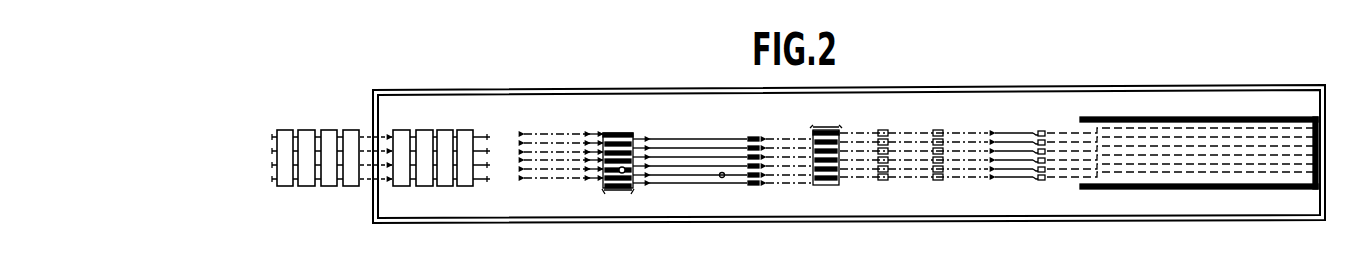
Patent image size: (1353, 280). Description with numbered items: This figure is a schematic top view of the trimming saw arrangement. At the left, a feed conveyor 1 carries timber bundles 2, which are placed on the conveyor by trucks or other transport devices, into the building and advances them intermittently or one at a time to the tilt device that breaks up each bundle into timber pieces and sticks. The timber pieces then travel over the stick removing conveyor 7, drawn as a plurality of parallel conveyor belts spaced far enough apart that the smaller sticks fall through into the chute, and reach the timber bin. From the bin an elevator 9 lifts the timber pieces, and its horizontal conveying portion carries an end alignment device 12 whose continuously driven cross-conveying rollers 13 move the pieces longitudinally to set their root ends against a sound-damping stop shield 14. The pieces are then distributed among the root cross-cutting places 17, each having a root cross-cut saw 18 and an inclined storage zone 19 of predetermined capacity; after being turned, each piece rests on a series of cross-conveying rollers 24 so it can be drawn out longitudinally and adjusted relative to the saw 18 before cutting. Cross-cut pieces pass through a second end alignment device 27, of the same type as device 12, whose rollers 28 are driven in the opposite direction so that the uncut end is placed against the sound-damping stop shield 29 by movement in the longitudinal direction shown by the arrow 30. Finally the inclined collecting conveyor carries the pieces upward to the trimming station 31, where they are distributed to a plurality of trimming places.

The feed conveyor 1 is at (363, 118).
The timber bundles 2 is at (445, 136).
The stick removing conveyor 7 is at (527, 122).
The elevator 9 is at (632, 119).
The end alignment device 12 is at (617, 117).
The cross-conveying rollers 13 is at (608, 133).
The sound-damping stop shield 14 is at (615, 188).
The root cross-cutting places 17 is at (702, 192).
The root cross-cut saw 18 is at (733, 187).
The inclined storage zone 19 is at (710, 137).
The cross-conveying rollers 24 is at (752, 137).
The end alignment device 27 is at (834, 110).
The rollers 28 is at (827, 172).
The sound-damping stop shield 29 is at (835, 122).
The arrow 30 is at (843, 155).
The trimming station 31 is at (948, 111).